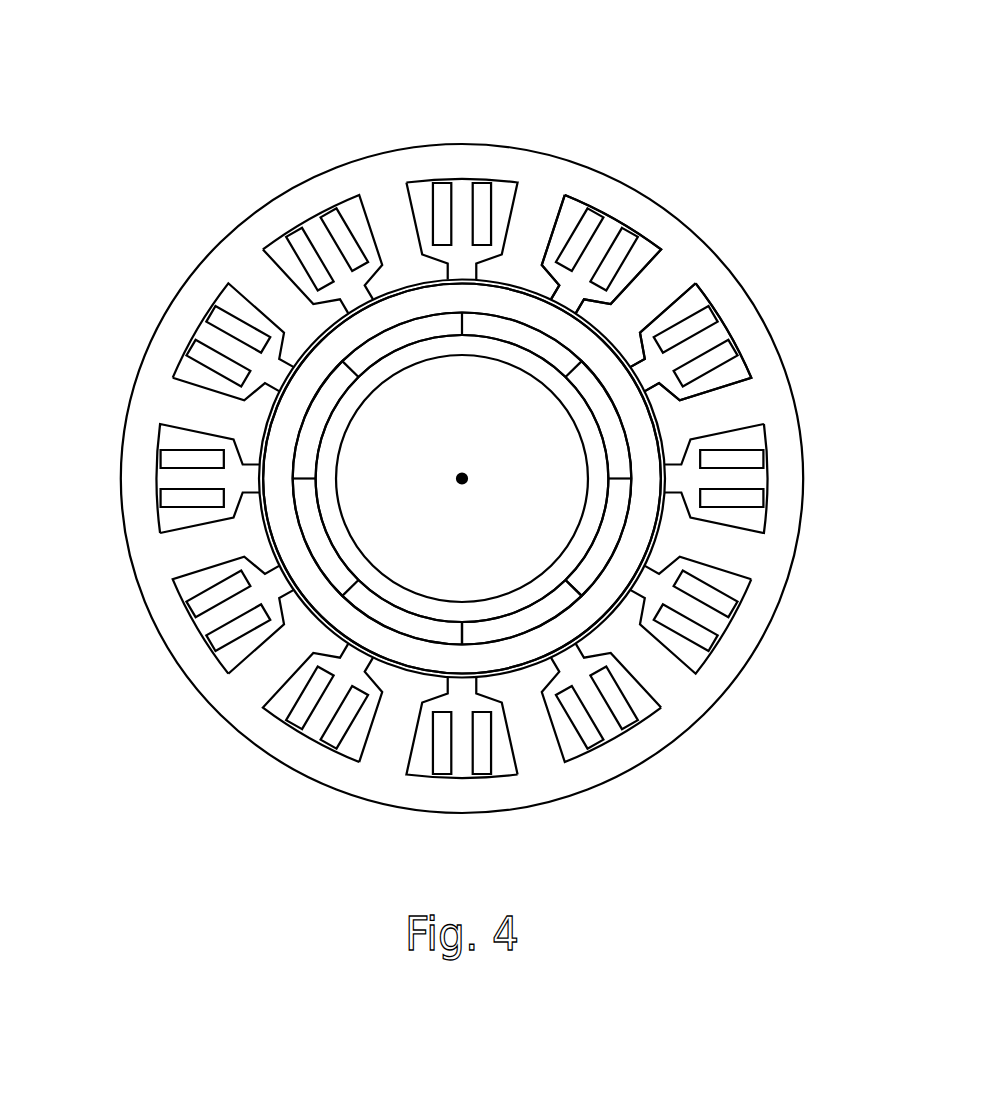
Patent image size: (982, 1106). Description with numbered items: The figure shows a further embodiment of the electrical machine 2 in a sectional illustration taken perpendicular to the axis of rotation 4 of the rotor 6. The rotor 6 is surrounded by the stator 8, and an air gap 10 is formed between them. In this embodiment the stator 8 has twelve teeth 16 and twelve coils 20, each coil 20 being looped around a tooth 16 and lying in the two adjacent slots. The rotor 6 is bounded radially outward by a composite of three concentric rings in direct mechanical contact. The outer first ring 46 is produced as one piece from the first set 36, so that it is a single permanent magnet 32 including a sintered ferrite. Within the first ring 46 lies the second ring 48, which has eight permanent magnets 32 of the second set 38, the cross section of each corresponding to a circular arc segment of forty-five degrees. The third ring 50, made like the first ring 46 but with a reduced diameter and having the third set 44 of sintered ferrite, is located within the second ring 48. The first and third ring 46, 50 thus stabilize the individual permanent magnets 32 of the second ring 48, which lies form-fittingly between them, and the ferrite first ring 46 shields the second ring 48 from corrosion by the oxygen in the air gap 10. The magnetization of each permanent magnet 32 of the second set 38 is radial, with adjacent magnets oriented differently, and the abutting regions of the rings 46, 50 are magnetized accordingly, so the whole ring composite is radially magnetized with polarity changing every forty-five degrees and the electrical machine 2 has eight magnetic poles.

The electrical machine 2 is at (208, 99).
The axis of rotation 4 is at (460, 482).
The rotor 6 is at (565, 506).
The stator 8 is at (764, 358).
The air gap 10 is at (510, 285).
The tooth 16 is at (638, 322).
The coil 20 is at (437, 202).
The permanent magnet 32 is at (338, 388).
The first set 36 is at (644, 477).
The second set 38 is at (593, 570).
The third set 44 is at (383, 588).
The first ring 46 is at (629, 405).
The second ring 48 is at (523, 620).
The third ring 50 is at (333, 437).